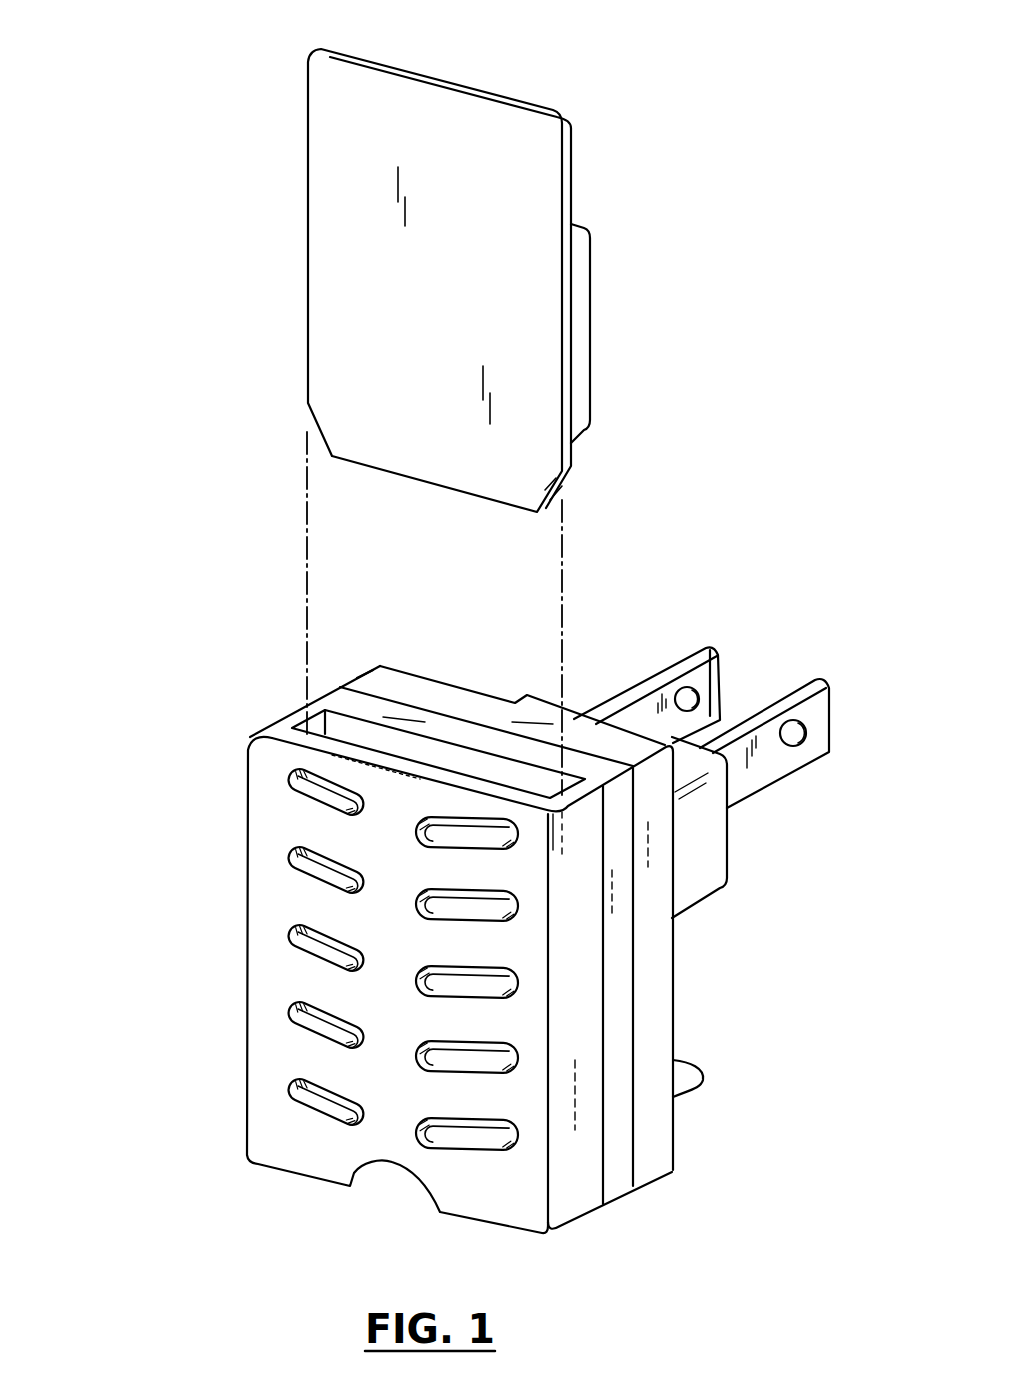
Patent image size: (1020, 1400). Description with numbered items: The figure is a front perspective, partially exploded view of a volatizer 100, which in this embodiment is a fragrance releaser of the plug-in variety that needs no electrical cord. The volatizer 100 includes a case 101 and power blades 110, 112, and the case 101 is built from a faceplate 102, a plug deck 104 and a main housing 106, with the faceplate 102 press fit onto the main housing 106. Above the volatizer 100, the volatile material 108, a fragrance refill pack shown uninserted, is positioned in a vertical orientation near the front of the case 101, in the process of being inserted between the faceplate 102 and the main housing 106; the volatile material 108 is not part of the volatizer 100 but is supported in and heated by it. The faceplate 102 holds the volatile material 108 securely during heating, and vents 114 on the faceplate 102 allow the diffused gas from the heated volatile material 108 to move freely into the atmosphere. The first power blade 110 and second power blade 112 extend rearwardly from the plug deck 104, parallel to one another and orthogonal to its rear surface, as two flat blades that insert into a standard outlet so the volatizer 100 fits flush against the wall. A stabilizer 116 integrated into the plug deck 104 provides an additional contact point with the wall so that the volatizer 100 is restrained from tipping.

The volatizer 100 is at (193, 558).
The case 101 is at (595, 642).
The faceplate 102 is at (308, 1145).
The plug deck 104 is at (648, 1145).
The main housing 106 is at (613, 1175).
The volatile material 108 is at (462, 180).
The first power blade 110 is at (765, 768).
The second power blade 112 is at (720, 661).
The vents 114 is at (285, 866).
The stabilizer 116 is at (688, 1079).